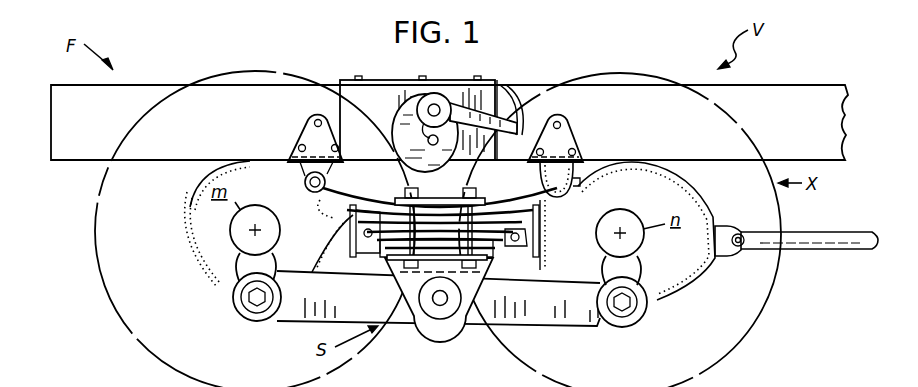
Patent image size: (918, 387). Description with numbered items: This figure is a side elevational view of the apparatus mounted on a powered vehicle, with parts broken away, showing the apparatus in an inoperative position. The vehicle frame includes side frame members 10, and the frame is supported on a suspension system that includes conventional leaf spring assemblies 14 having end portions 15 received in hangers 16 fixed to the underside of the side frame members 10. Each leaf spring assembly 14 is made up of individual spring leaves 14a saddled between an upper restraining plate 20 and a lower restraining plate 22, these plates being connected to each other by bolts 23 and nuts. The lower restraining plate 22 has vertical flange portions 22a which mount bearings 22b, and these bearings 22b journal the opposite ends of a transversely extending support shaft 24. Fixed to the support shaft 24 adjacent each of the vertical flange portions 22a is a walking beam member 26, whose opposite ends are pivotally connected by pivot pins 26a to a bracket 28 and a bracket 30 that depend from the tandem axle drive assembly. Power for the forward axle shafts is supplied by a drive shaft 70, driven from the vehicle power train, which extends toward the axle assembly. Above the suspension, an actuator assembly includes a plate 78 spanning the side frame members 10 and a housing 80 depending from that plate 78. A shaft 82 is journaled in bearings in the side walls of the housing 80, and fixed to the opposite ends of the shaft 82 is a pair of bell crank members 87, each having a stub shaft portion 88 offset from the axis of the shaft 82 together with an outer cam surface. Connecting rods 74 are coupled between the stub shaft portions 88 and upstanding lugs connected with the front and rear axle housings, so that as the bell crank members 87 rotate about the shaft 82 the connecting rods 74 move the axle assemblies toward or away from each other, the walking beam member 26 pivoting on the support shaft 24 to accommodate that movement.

The side frame member 10 is at (449, 122).
The leaf spring assembly 14 is at (519, 237).
The spring leaf 14a is at (342, 194).
The end portion 15 is at (582, 182).
The hanger 16 is at (294, 132).
The upper restraining plate 20 is at (478, 193).
The lower restraining plate 22 is at (490, 265).
The vertical flange portion 22a is at (473, 320).
The bearing 22b is at (419, 297).
The bolt 23 is at (385, 258).
The support shaft 24 is at (438, 306).
The walking beam member 26 is at (438, 298).
The pivot pin 26a is at (253, 300).
The bracket 28 is at (636, 266).
The bracket 30 is at (240, 264).
The drive shaft 70 is at (828, 231).
The connecting rod 74 is at (505, 102).
The plate 78 is at (434, 82).
The housing 80 is at (480, 90).
The shaft 82 is at (406, 128).
The bell crank member 87 is at (404, 138).
The stub shaft portion 88 is at (431, 108).